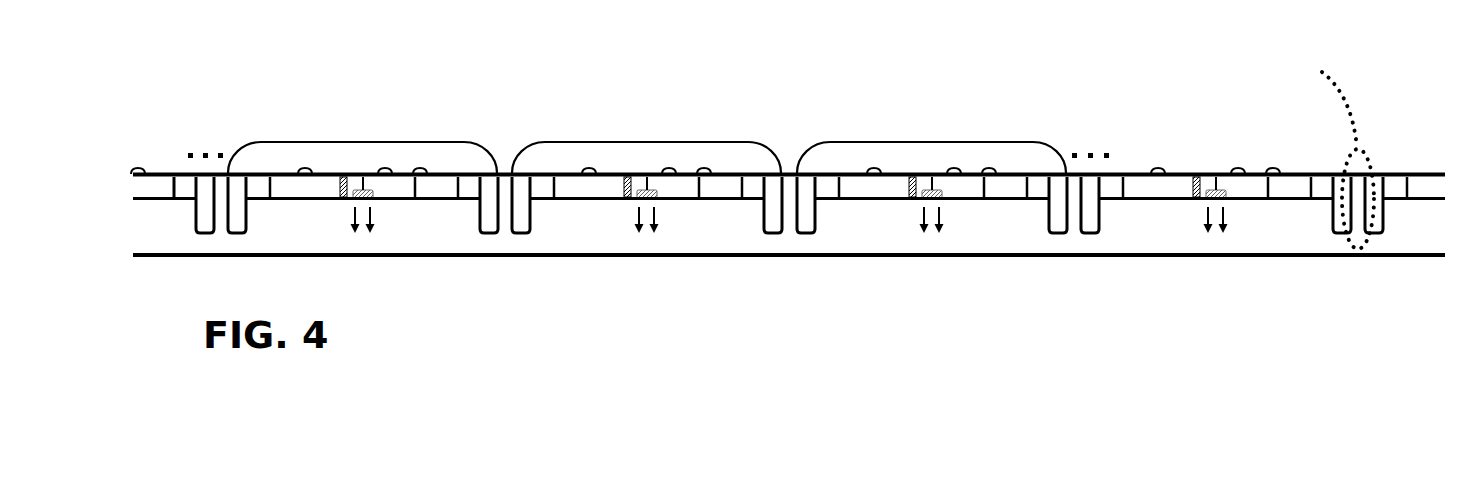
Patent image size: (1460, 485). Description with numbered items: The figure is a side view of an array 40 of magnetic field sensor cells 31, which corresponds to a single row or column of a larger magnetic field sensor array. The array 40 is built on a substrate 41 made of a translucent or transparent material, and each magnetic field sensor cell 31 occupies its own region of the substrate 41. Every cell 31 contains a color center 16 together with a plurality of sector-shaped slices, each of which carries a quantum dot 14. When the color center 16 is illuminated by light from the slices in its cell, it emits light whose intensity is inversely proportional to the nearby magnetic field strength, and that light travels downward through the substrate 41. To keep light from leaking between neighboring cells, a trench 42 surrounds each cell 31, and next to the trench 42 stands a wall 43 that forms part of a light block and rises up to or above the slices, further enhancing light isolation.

The array 40 is at (192, 76).
The magnetic field sensor cell 31 is at (363, 142).
The quantum dot 14 is at (1157, 170).
The color center 16 is at (1219, 190).
The substrate 41 is at (1148, 225).
The trench 42 is at (1333, 205).
The wall 43 is at (1333, 151).